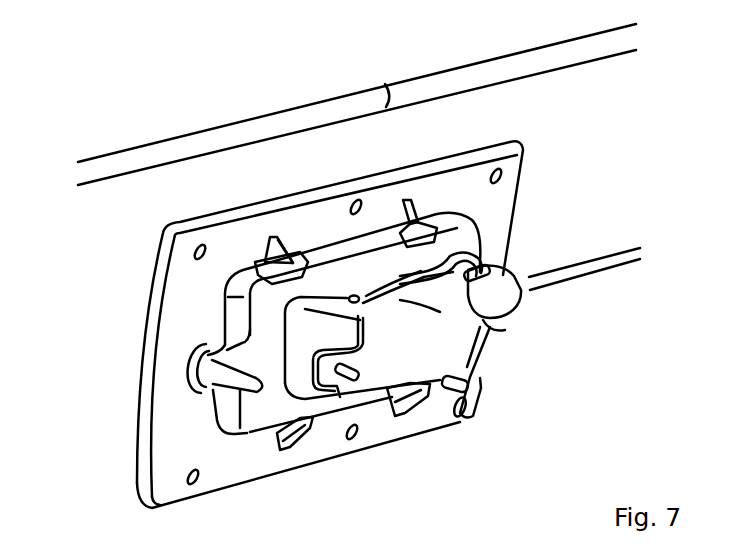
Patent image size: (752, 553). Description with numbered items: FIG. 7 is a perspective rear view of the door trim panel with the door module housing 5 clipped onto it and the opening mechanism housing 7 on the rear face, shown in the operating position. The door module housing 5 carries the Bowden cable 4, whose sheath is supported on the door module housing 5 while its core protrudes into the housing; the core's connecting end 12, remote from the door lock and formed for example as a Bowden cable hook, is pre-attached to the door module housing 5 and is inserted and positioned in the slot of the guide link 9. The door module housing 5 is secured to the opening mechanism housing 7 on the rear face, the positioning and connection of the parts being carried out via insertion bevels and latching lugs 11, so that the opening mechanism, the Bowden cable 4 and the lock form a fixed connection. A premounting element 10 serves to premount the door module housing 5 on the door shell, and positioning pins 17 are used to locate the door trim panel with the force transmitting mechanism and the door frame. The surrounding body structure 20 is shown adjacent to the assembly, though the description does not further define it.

The bar / body element 20 is at (583, 97).
The opening mechanism housing 7 is at (513, 178).
The Bowden cable 4 is at (623, 253).
The door module housing 5 is at (464, 238).
The latching lugs 11 is at (405, 212).
The connecting end 12 is at (352, 297).
The positioning pins 17 is at (227, 377).
The guide link 9 is at (400, 300).
The premounting element 10 is at (457, 383).